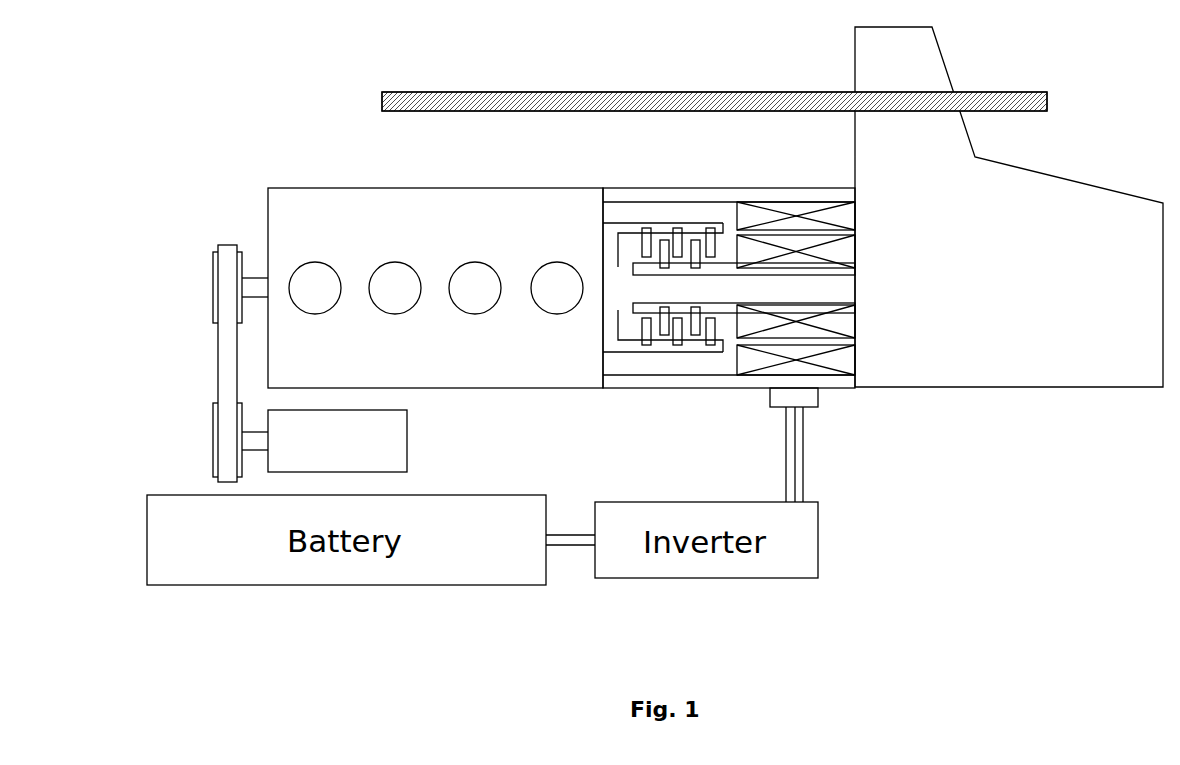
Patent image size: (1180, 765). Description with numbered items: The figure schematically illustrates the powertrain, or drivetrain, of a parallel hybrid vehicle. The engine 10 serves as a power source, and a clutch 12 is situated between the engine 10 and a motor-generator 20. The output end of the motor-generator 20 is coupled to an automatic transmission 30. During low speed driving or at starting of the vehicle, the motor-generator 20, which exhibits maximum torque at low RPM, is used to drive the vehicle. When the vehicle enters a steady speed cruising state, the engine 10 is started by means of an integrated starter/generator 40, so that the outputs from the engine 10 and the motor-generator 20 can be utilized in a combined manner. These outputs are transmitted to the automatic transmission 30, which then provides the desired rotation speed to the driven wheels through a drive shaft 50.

The engine 10 is at (296, 198).
The clutch 12 is at (677, 235).
The motor-generator 20 is at (850, 318).
The automatic transmission 30 is at (1075, 198).
The integrated starter/generator 40 is at (397, 437).
The drive shaft 50 is at (737, 100).